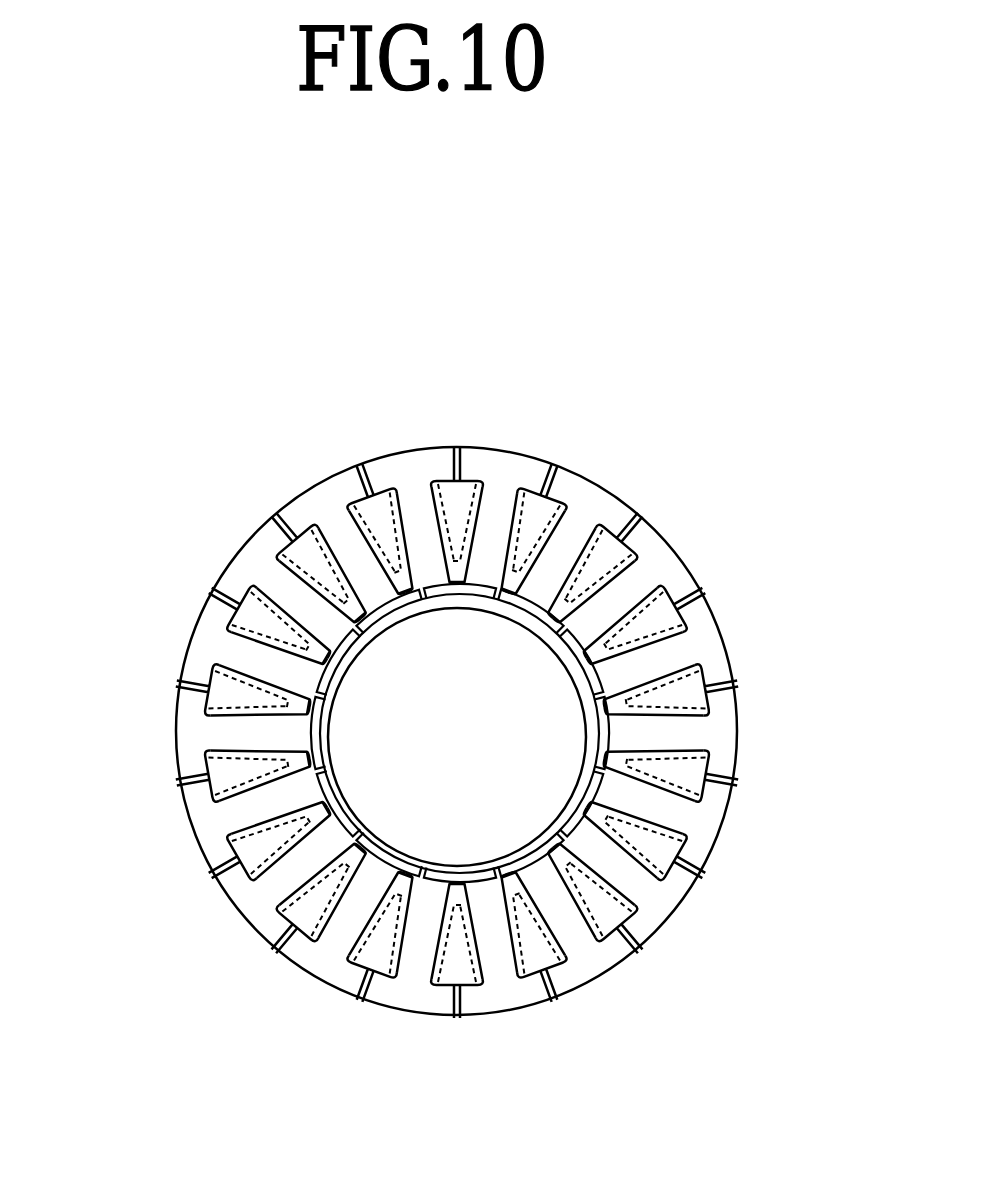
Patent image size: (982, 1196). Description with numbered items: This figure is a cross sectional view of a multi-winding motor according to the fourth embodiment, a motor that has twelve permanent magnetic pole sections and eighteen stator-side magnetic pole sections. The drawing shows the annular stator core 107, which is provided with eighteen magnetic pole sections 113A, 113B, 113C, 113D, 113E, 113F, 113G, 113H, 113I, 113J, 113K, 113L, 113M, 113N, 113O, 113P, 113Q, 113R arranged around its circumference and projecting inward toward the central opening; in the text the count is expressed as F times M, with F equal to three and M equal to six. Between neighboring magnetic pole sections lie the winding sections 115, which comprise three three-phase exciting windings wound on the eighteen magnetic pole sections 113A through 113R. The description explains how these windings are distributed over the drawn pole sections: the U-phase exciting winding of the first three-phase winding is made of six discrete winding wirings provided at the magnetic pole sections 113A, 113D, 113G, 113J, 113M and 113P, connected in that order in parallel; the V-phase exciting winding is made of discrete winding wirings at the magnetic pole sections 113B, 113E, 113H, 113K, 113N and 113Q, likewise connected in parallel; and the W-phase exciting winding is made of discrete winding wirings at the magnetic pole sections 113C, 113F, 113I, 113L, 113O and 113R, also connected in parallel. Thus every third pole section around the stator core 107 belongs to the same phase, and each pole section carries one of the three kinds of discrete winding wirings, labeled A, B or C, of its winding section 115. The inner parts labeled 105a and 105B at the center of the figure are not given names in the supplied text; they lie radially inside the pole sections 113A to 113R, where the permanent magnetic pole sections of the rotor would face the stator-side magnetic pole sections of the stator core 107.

The stator core 107 is at (700, 521).
The inner bore of rotor support 105a is at (485, 668).
The inner ring member 105B is at (448, 583).
The magnetic pole section 113A is at (492, 526).
The magnetic pole section 113B is at (580, 528).
The magnetic pole section 113C is at (637, 576).
The magnetic pole section 113D is at (680, 648).
The magnetic pole section 113E is at (688, 733).
The magnetic pole section 113F is at (676, 812).
The magnetic pole section 113G is at (633, 882).
The magnetic pole section 113H is at (575, 935).
The magnetic pole section 113I is at (497, 963).
The magnetic pole section 113J is at (417, 957).
The magnetic pole section 113K is at (347, 932).
The magnetic pole section 113L is at (266, 888).
The magnetic pole section 113M is at (255, 805).
The magnetic pole section 113N is at (230, 728).
The magnetic pole section 113O is at (247, 653).
The magnetic pole section 113P is at (282, 587).
The magnetic pole section 113Q is at (340, 522).
The magnetic pole section 113R is at (412, 520).
The winding sections 115 is at (437, 485).